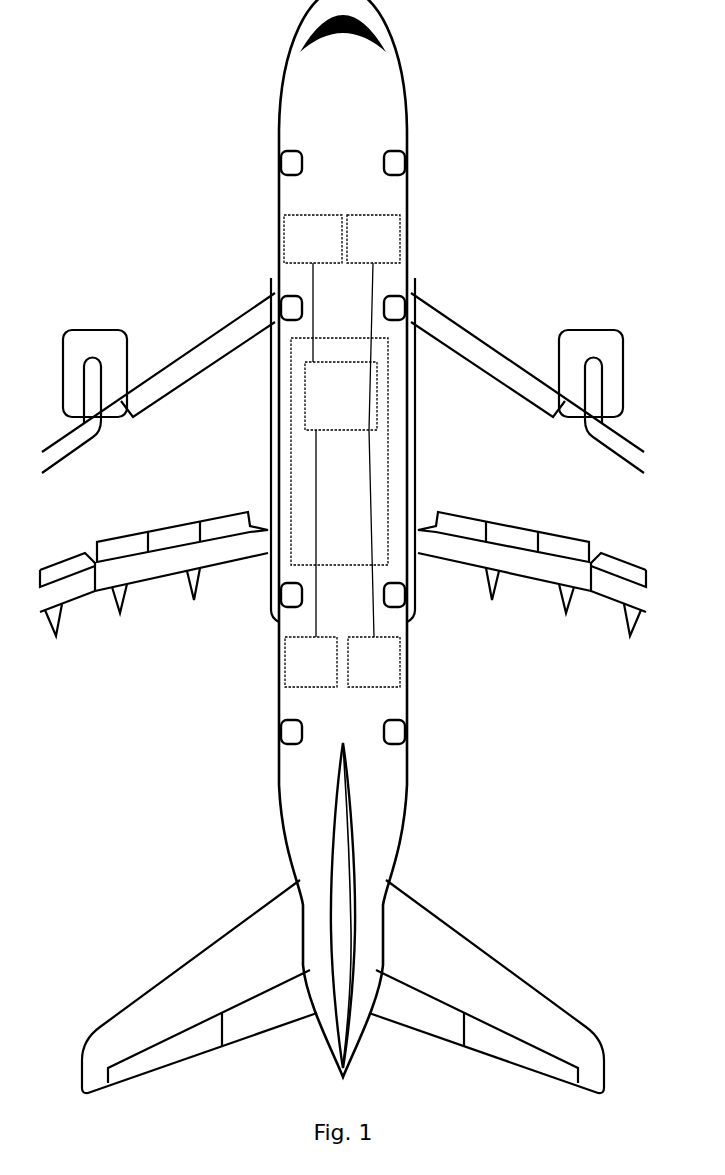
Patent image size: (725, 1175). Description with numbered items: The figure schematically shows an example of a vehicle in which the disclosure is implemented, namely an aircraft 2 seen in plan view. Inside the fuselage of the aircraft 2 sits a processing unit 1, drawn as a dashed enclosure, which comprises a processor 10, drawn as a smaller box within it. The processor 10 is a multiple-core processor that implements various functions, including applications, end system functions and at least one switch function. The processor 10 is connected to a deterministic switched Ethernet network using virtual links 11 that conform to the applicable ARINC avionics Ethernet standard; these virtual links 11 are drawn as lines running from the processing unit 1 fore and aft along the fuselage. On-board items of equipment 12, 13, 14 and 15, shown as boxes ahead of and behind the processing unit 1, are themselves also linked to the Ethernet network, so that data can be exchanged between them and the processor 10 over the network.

The processing unit 1 is at (388, 472).
The aircraft 2 is at (398, 70).
The processor 10 is at (351, 404).
The virtual links 11 is at (371, 292).
The on-board item of equipment 12 is at (322, 249).
The on-board item of equipment 13 is at (383, 249).
The on-board item of equipment 14 is at (320, 670).
The on-board item of equipment 15 is at (383, 670).